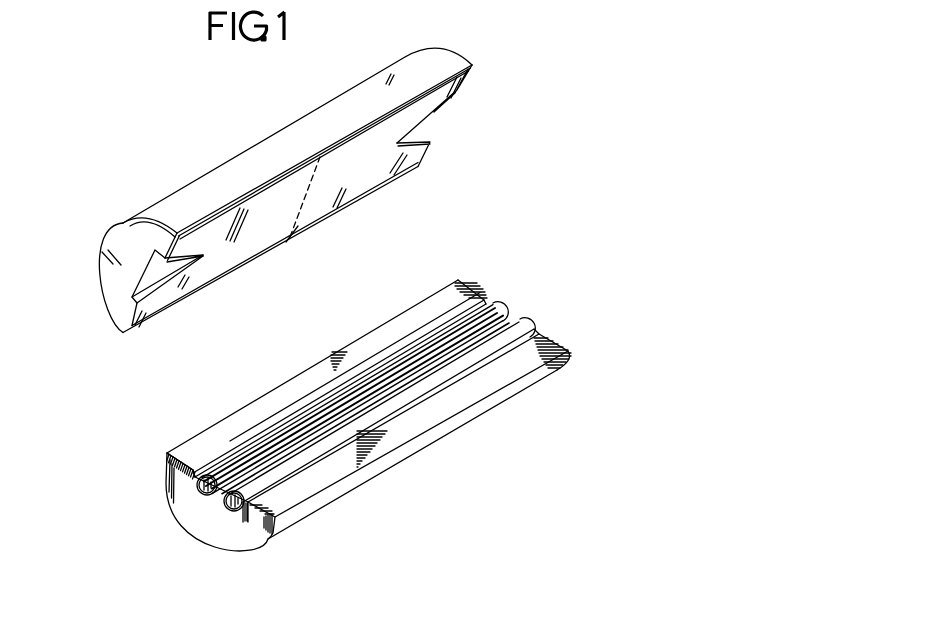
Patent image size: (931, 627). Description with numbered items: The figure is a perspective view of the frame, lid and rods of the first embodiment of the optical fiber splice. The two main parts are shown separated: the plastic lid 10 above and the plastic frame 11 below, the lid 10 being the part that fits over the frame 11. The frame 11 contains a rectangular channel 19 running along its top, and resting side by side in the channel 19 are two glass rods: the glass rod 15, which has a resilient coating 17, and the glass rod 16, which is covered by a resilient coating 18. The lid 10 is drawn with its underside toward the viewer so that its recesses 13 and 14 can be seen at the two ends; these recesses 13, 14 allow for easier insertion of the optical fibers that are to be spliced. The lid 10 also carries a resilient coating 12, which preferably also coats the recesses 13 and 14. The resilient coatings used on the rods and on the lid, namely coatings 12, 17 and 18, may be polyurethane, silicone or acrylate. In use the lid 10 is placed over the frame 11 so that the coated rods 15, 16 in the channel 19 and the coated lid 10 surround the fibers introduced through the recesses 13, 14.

The plastic lid 10 is at (113, 242).
The plastic frame 11 is at (185, 500).
The resilient coating 12 is at (389, 180).
The recess 13 is at (130, 296).
The recess 14 is at (428, 121).
The glass rod 15 is at (232, 511).
The glass rod 16 is at (199, 496).
The resilient coating 17 is at (246, 523).
The resilient coating 18 is at (198, 472).
The rectangular channel 19 is at (476, 306).